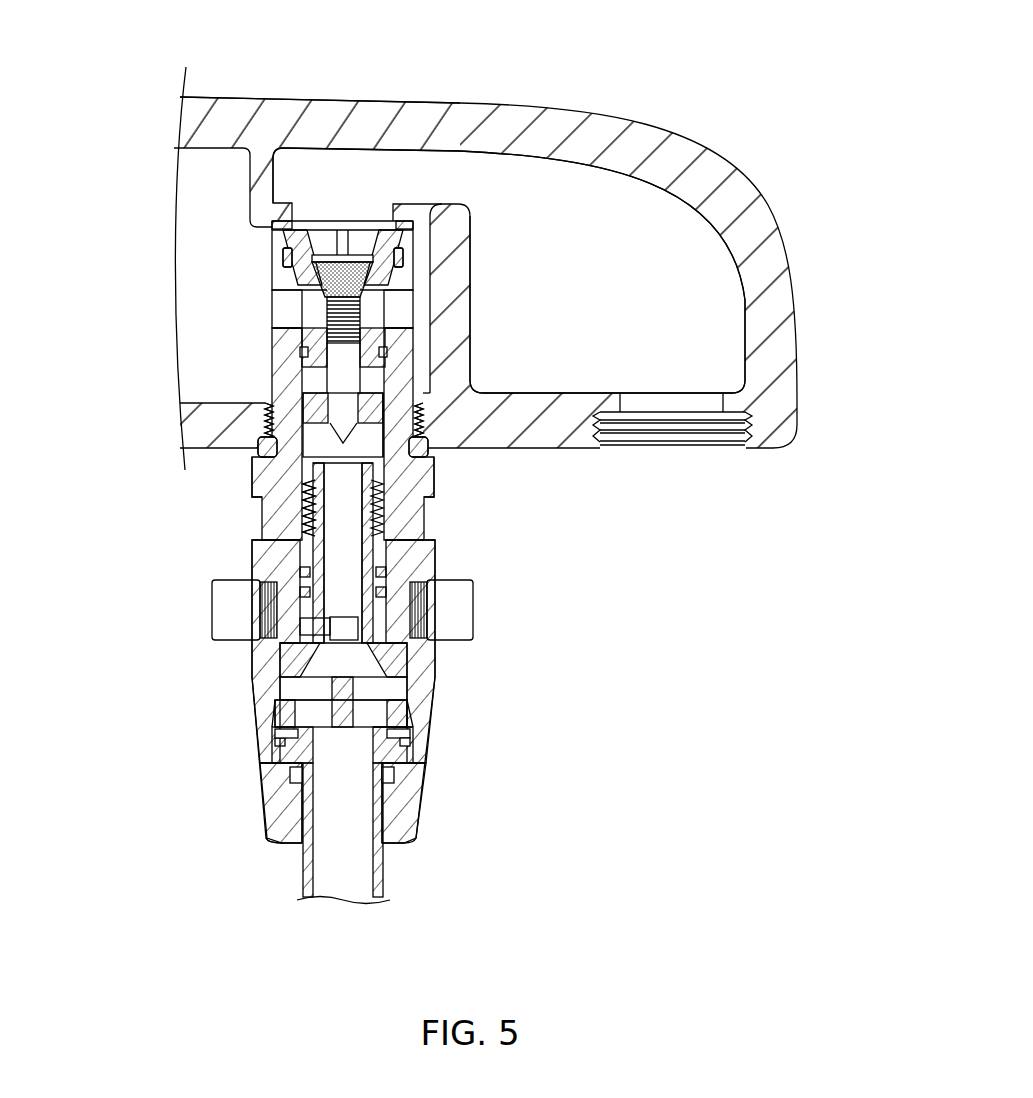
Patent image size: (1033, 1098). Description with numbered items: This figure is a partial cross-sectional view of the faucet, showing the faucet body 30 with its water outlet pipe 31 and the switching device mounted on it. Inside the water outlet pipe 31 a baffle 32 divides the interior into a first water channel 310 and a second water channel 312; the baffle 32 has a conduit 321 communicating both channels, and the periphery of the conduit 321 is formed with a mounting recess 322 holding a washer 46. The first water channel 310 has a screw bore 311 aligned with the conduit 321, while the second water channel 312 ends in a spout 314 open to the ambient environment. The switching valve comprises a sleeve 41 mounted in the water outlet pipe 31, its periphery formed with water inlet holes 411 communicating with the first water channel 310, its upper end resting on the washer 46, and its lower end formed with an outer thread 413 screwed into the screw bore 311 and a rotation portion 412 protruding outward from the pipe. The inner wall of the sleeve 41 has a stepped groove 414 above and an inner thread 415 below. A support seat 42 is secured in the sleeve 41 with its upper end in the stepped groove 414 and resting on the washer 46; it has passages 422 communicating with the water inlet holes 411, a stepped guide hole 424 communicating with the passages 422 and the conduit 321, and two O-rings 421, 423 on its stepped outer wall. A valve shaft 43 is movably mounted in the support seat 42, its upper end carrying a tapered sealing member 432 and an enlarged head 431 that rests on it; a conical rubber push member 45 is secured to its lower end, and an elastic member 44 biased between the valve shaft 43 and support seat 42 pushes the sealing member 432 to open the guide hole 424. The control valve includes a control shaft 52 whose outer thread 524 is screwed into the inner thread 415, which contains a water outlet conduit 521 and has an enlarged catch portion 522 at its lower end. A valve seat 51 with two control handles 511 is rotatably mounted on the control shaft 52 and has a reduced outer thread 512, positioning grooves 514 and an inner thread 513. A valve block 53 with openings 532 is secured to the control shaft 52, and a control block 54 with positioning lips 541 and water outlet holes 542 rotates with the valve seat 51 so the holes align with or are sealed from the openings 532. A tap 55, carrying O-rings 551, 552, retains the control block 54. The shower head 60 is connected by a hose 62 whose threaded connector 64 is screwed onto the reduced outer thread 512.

The faucet body 30 is at (683, 128).
The water outlet pipe 31 is at (567, 122).
The first water channel 310 is at (193, 167).
The screw bore 311 is at (260, 430).
The second water channel 312 is at (578, 183).
The spout 314 is at (720, 410).
The baffle 32 is at (462, 325).
The conduit 321 is at (329, 212).
The mounting recess 322 is at (271, 223).
The sleeve 41 is at (296, 394).
The water inlet holes 411 is at (280, 308).
The rotation portion 412 is at (423, 518).
The outer thread 413 is at (260, 430).
The stepped groove 414 is at (282, 249).
The inner thread 415 is at (305, 495).
The support seat 42 is at (474, 172).
The O-ring 421 is at (455, 222).
The passages 422 is at (375, 302).
The O-ring 423 is at (457, 347).
The stepped guide hole 424 is at (307, 240).
The valve shaft 43 is at (243, 248).
The enlarged head 431 is at (326, 257).
The tapered sealing member 432 is at (330, 312).
The elastic member 44 is at (335, 311).
The push member 45 is at (378, 400).
The washer 46 is at (395, 255).
The valve seat 51 is at (358, 691).
The control handles 511 is at (462, 607).
The reduced outer thread 512 is at (267, 703).
The inner thread 513 is at (267, 737).
The positioning grooves 514 is at (415, 703).
The control shaft 52 is at (322, 553).
The water outlet conduit 521 is at (327, 527).
The enlarged catch portion 522 is at (398, 670).
The outer thread 524 is at (305, 495).
The valve block 53 is at (333, 696).
The openings 532 is at (383, 688).
The control block 54 is at (358, 787).
The positioning lips 541 is at (415, 703).
The water outlet holes 542 is at (293, 716).
The tap 55 is at (407, 770).
The O-ring 551 is at (415, 735).
The O-ring 552 is at (272, 733).
The shower head 60 is at (290, 822).
The hose 62 is at (308, 872).
The threaded connector 64 is at (273, 837).